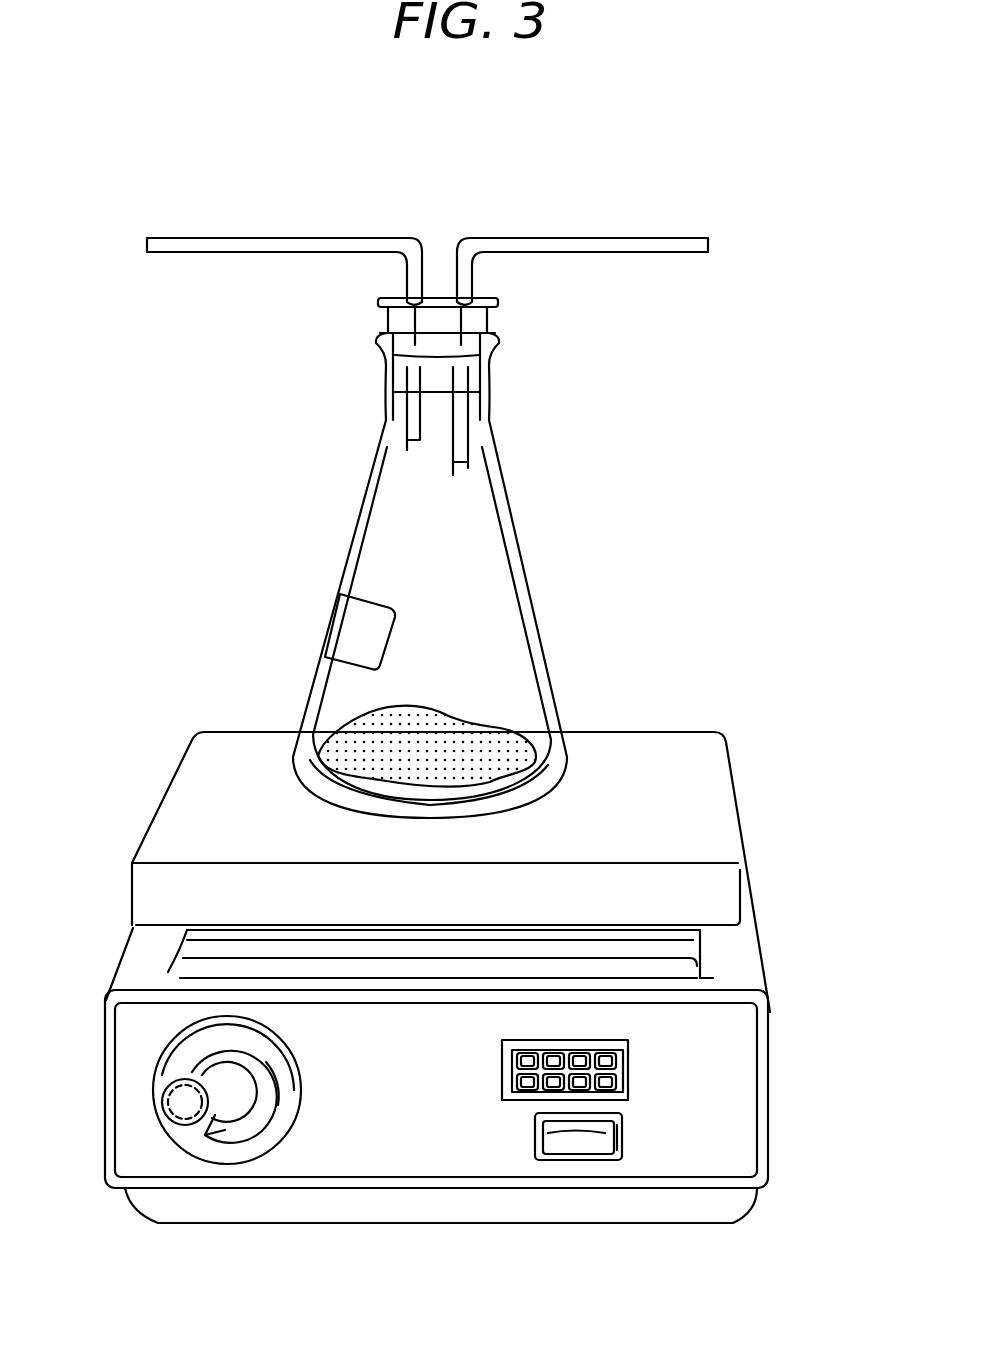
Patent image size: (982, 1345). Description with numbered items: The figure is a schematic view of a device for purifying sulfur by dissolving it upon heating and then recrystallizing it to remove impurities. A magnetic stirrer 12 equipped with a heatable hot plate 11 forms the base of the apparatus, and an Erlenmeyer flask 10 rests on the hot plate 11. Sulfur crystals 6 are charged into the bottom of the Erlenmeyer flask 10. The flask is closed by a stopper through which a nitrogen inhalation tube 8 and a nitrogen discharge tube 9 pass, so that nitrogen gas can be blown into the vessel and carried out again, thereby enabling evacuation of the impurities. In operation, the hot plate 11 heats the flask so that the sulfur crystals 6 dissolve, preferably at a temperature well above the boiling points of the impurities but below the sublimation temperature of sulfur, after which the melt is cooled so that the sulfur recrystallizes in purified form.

The sulfur crystals 6 is at (505, 745).
The nitrogen inhalation tube 8 is at (625, 238).
The nitrogen discharge tube 9 is at (275, 238).
The Erlenmeyer flask 10 is at (505, 507).
The hot plate 11 is at (690, 802).
The magnetic stirrer 12 is at (738, 1060).